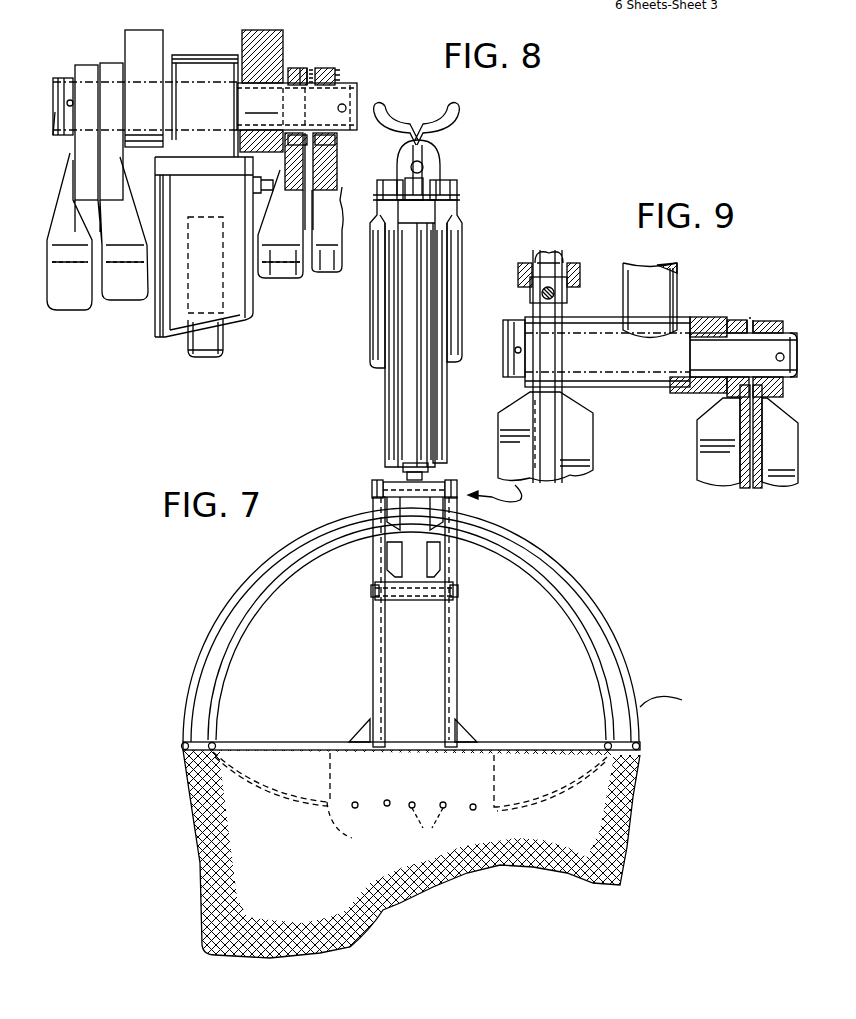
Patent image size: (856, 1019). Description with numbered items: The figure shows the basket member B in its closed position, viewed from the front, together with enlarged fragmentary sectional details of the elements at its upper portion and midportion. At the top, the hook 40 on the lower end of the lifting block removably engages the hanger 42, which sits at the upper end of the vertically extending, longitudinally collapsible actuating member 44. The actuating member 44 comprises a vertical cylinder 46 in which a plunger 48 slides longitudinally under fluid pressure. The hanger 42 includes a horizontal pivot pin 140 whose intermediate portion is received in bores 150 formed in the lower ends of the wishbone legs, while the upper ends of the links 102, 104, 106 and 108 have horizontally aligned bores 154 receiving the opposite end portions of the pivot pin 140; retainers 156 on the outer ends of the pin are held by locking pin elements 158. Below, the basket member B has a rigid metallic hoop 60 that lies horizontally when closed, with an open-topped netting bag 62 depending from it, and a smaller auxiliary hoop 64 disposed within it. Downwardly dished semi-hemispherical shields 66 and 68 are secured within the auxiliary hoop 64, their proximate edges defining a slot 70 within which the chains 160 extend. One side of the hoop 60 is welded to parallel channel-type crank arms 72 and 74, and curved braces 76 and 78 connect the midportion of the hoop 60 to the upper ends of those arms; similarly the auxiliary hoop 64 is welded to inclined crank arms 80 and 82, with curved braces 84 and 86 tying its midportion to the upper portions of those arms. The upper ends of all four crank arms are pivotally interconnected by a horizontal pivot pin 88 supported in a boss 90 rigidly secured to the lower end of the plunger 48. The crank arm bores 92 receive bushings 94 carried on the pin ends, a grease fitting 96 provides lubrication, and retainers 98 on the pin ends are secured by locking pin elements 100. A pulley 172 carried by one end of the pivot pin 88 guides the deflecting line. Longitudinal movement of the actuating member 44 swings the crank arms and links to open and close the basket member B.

In FIG. 8, the hook 40 is at (424, 138).
In FIG. 8, the hanger 42 is at (238, 43).
In FIG. 8, the actuating member 44 is at (255, 312).
In FIG. 8, the vertical cylinder 46 is at (166, 337).
In FIG. 8, the plunger 48 is at (225, 346).
In FIG. 9, the plunger 48 is at (665, 290).
In FIG. 7, the hoop 60 is at (631, 757).
In FIG. 7, the bag 62 is at (618, 858).
In FIG. 7, the auxiliary hoop 64 is at (607, 746).
In FIG. 7, the shield 66 is at (285, 798).
In FIG. 7, the shield 68 is at (547, 799).
In FIG. 7, the slot 70 is at (353, 827).
In FIG. 9, the crank arm 72 is at (498, 440).
In FIG. 7, the crank arm 72 is at (375, 630).
In FIG. 9, the crank arm 74 is at (780, 485).
In FIG. 7, the crank arm 74 is at (455, 632).
In FIG. 7, the brace 76 is at (218, 622).
In FIG. 7, the brace 78 is at (598, 615).
In FIG. 9, the crank arm 80 is at (588, 447).
In FIG. 7, the crank arm 80 is at (392, 513).
In FIG. 9, the crank arm 82 is at (713, 465).
In FIG. 7, the crank arm 82 is at (443, 531).
In FIG. 7, the brace 84 is at (225, 665).
In FIG. 7, the brace 86 is at (595, 662).
In FIG. 9, the pivot pin 88 is at (661, 352).
In FIG. 7, the pivot pin 88 is at (392, 482).
In FIG. 9, the boss 90 is at (698, 318).
In FIG. 7, the boss 90 is at (432, 479).
In FIG. 9, the bores 92 is at (772, 320).
In FIG. 9, the bushings 94 is at (753, 320).
In FIG. 9, the grease fitting 96 is at (737, 392).
In FIG. 9, the retainers 98 is at (505, 342).
In FIG. 9, the locking pin elements 100 is at (533, 390).
In FIG. 8, the link 102 is at (72, 302).
In FIG. 8, the link 104 is at (318, 268).
In FIG. 8, the link 106 is at (128, 292).
In FIG. 8, the link 108 is at (272, 274).
In FIG. 8, the pivot pin 140 is at (486, 189).
In FIG. 8, the bores 150 is at (283, 62).
In FIG. 8, the bores 154 is at (342, 82).
In FIG. 8, the retainers 156 is at (68, 137).
In FIG. 8, the locking pin elements 158 is at (70, 98).
In FIG. 7, the chains 160 is at (414, 828).
In FIG. 9, the pulley 172 is at (557, 265).
In FIG. 7, the basket member B is at (671, 701).